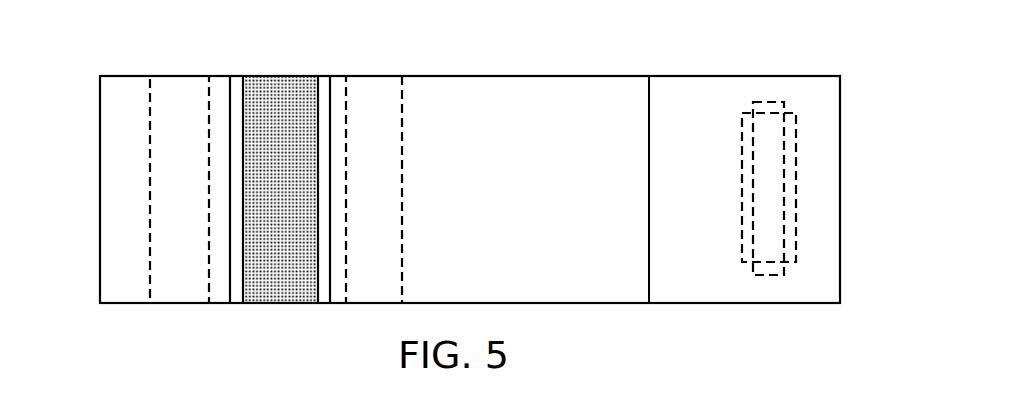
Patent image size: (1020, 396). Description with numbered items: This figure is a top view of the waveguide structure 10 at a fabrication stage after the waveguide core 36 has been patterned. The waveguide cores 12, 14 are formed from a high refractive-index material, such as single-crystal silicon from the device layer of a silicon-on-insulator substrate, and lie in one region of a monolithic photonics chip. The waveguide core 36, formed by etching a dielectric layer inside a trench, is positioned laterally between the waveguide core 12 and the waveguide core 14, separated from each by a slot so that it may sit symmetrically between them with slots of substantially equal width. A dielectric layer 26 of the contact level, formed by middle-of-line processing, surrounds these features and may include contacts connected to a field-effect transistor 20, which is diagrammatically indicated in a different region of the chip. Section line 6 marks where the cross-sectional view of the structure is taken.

The waveguide structure 10 is at (128, 59).
The waveguide core 12 is at (139, 259).
The waveguide core 14 is at (409, 160).
The waveguide core 36 is at (285, 217).
The dielectric layer 26 is at (471, 277).
The field-effect transistor 20 is at (806, 229).
The section line 6 is at (67, 210).